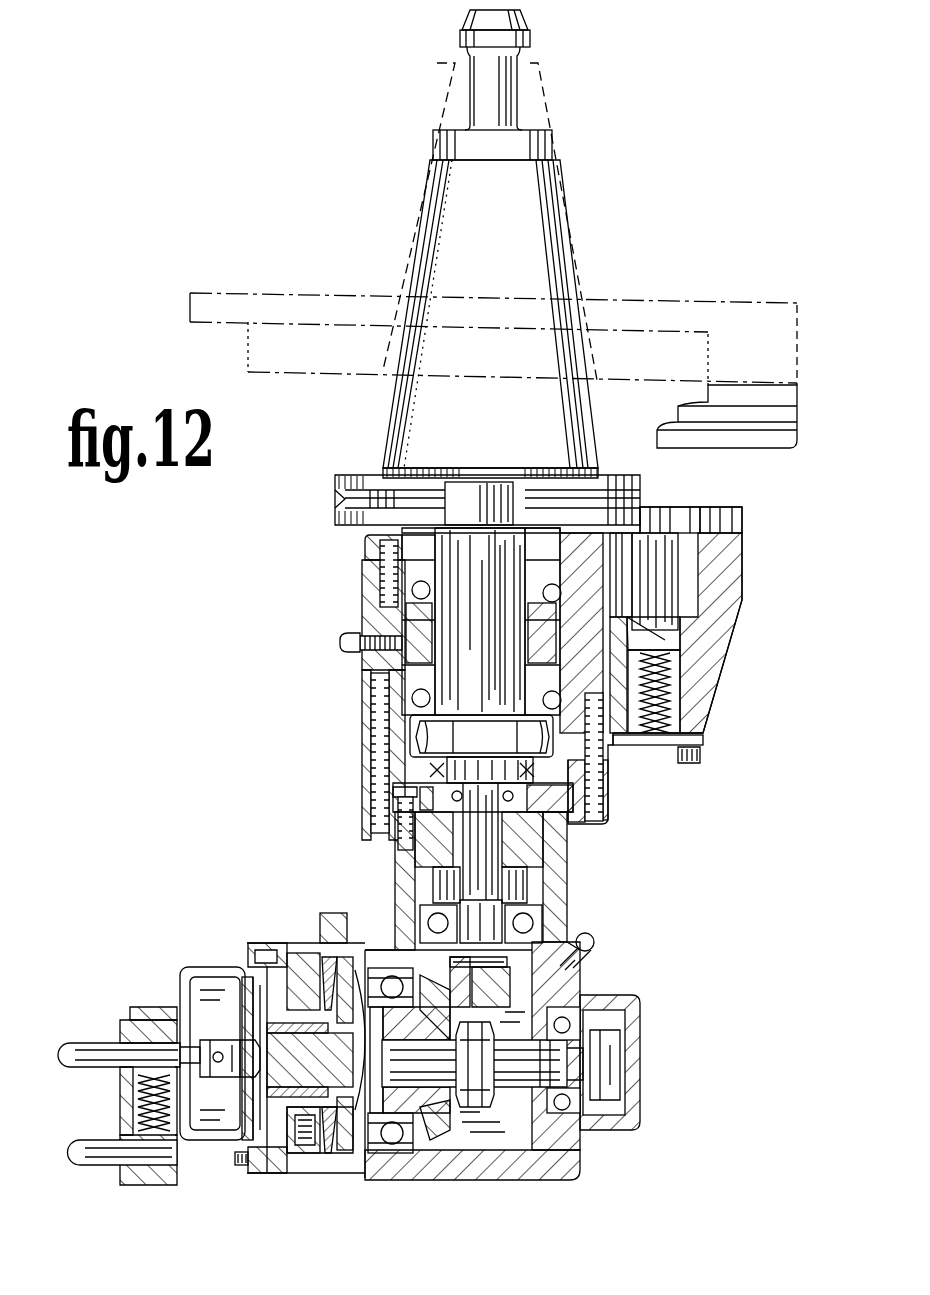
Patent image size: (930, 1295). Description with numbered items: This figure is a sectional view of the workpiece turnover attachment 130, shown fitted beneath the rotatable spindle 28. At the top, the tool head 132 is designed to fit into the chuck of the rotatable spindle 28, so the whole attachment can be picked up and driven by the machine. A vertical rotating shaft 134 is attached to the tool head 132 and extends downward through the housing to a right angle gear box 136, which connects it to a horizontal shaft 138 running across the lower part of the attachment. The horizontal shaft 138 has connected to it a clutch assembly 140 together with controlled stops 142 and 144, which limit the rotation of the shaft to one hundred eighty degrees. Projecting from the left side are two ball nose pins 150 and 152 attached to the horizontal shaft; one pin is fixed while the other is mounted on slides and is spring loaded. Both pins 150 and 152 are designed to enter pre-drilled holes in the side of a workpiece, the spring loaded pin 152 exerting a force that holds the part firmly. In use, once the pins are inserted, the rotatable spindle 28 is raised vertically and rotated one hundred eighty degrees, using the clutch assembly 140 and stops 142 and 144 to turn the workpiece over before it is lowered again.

The rotatable spindle 28 is at (413, 182).
The tool head 132 is at (388, 407).
The workpiece turnover attachment 130 is at (203, 610).
The vertical rotating shaft 134 is at (457, 660).
The right angle gear box 136 is at (428, 990).
The horizontal shaft 138 is at (493, 1090).
The clutch assembly 140 is at (364, 1165).
The controlled stop 142 is at (317, 953).
The controlled stop 144 is at (312, 1165).
The ball nose pin 150 is at (81, 1049).
The spring loaded ball nose pin 152 is at (87, 1163).